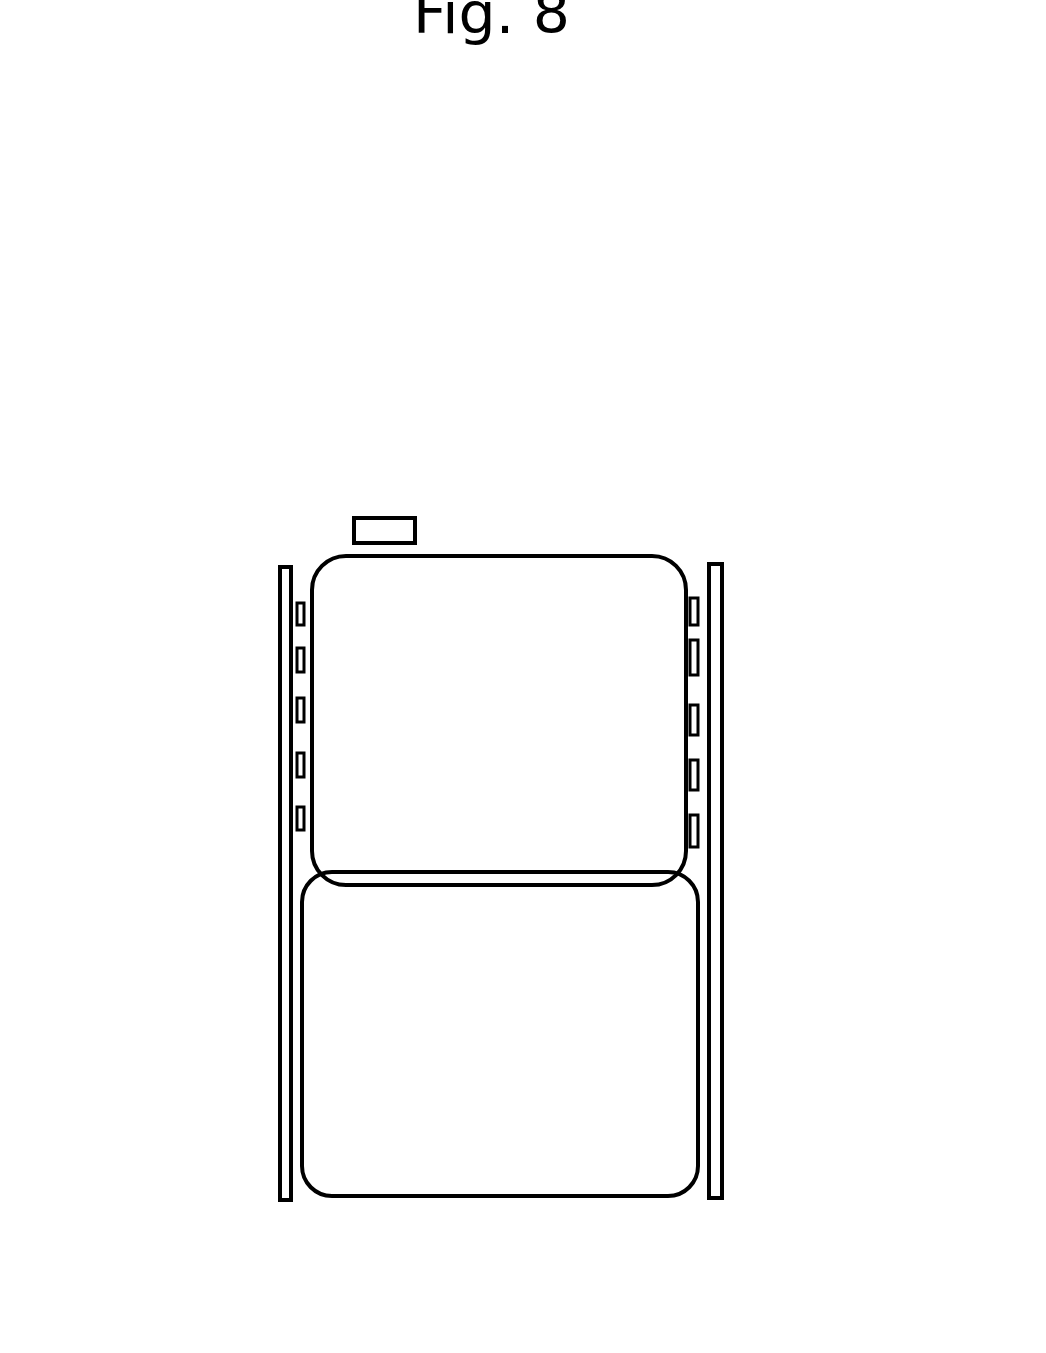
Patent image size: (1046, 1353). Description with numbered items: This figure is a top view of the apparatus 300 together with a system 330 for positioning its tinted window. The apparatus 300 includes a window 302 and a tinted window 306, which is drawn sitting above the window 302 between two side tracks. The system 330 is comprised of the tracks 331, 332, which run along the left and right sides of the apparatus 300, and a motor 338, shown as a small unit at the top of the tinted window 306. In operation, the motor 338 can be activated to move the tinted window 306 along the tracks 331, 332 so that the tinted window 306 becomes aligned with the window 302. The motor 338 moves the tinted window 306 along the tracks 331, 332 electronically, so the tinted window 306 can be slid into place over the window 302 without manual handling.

The apparatus 300 is at (728, 752).
The window 302 is at (722, 967).
The tinted window 306 is at (593, 561).
The system 330 is at (432, 495).
The track 331 is at (288, 607).
The track 332 is at (722, 598).
The motor 338 is at (385, 533).